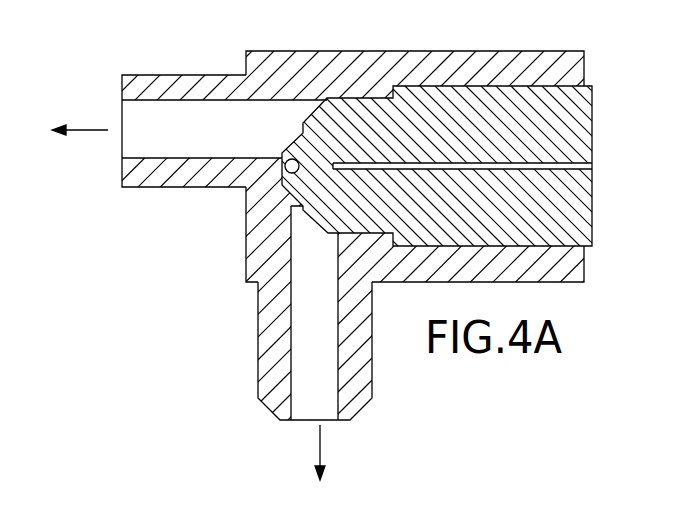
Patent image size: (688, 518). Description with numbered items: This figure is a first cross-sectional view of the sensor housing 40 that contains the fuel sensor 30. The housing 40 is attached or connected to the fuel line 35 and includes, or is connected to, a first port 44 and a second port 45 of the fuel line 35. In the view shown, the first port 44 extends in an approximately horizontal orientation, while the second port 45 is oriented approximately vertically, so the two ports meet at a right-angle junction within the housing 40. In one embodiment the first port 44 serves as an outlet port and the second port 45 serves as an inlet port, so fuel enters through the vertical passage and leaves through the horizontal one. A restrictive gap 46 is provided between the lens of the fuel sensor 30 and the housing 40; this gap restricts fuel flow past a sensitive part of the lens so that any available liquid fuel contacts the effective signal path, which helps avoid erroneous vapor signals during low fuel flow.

The fuel sensor 30 is at (592, 127).
The fuel line 35 is at (178, 313).
The sensor housing 40 is at (531, 51).
The first port 44 is at (182, 188).
The second port 45 is at (258, 344).
The restrictive gap 46 is at (292, 143).